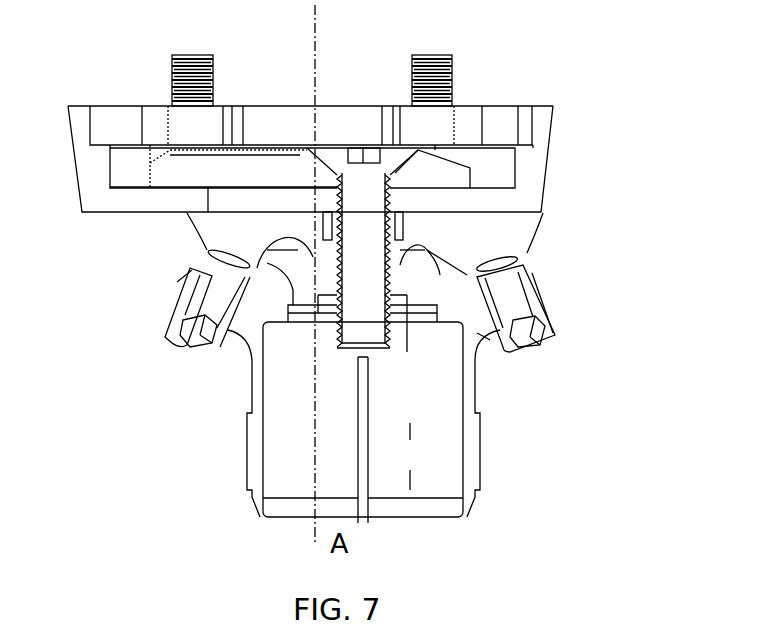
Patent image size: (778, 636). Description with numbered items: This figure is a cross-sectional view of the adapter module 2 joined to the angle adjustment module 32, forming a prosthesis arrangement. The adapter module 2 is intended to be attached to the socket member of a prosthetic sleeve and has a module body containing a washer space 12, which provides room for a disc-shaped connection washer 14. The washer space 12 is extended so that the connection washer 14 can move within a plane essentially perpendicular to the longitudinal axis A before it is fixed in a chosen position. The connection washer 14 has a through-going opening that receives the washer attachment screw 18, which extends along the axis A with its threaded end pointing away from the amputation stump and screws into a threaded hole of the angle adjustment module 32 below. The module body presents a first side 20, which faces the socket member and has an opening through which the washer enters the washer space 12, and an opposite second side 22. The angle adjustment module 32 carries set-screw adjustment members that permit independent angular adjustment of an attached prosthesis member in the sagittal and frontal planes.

The adapter module 2 is at (623, 108).
The washer space 12 is at (495, 167).
The connection washer 14 is at (227, 167).
The washer attachment screw 18 is at (365, 240).
The first side 20 is at (107, 212).
The second side 22 is at (112, 106).
The angle adjustment module 32 is at (608, 330).